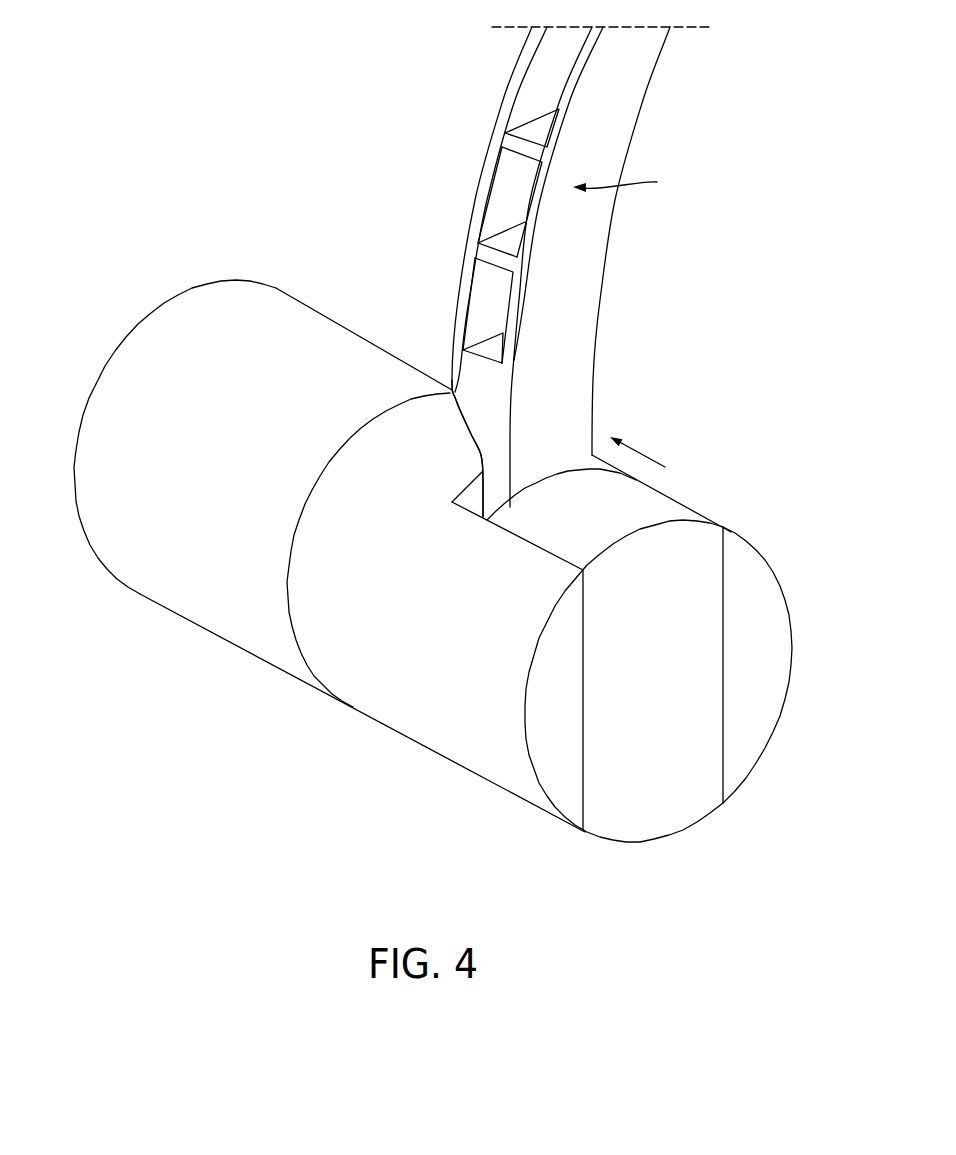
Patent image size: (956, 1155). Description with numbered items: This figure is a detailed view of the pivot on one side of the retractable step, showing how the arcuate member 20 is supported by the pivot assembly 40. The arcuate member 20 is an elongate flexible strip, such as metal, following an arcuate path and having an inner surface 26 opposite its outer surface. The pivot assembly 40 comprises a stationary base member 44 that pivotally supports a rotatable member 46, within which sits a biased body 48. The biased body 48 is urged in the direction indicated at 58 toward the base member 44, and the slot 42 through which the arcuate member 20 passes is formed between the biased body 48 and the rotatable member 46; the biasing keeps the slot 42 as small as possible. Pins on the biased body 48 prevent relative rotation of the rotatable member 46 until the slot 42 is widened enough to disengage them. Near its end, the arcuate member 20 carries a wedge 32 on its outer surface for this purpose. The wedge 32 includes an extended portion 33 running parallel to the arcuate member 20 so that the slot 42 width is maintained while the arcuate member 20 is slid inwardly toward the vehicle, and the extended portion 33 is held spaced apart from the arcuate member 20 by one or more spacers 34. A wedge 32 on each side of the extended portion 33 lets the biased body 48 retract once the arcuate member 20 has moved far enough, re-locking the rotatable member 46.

The arcuate member 20 is at (597, 123).
The inner surface 26 is at (632, 183).
The wedge 32 is at (453, 427).
The extended portion 33 is at (492, 147).
The spacer 34 is at (495, 253).
The pivot assembly 40 is at (694, 442).
The slot 42 is at (462, 492).
The stationary base member 44 is at (307, 304).
The rotatable member 46 is at (478, 776).
The biased body 48 is at (665, 520).
The biasing direction 58 is at (642, 452).